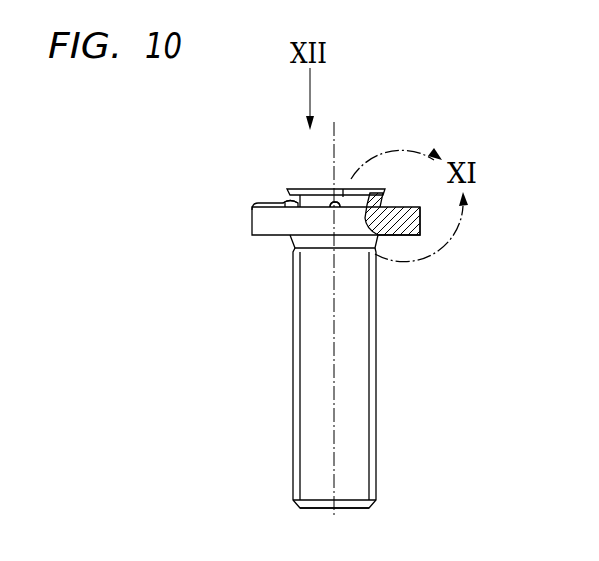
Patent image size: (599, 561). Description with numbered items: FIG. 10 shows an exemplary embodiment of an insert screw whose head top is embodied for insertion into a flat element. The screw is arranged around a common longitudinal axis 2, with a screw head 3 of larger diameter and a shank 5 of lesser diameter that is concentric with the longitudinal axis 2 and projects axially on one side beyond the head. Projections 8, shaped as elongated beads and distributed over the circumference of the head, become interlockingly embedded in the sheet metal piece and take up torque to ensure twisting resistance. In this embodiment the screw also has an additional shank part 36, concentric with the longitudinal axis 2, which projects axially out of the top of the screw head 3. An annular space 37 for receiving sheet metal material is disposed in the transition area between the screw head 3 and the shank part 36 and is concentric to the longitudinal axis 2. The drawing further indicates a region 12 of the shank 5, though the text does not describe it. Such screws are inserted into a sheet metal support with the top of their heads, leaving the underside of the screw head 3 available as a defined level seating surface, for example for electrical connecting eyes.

The longitudinal axis 2 is at (333, 476).
The screw head 3 is at (251, 222).
The shank 5 is at (312, 420).
The projections 8 is at (268, 203).
The thread 12 is at (293, 357).
The additional shank part 36 is at (318, 188).
The annular space 37 is at (391, 198).